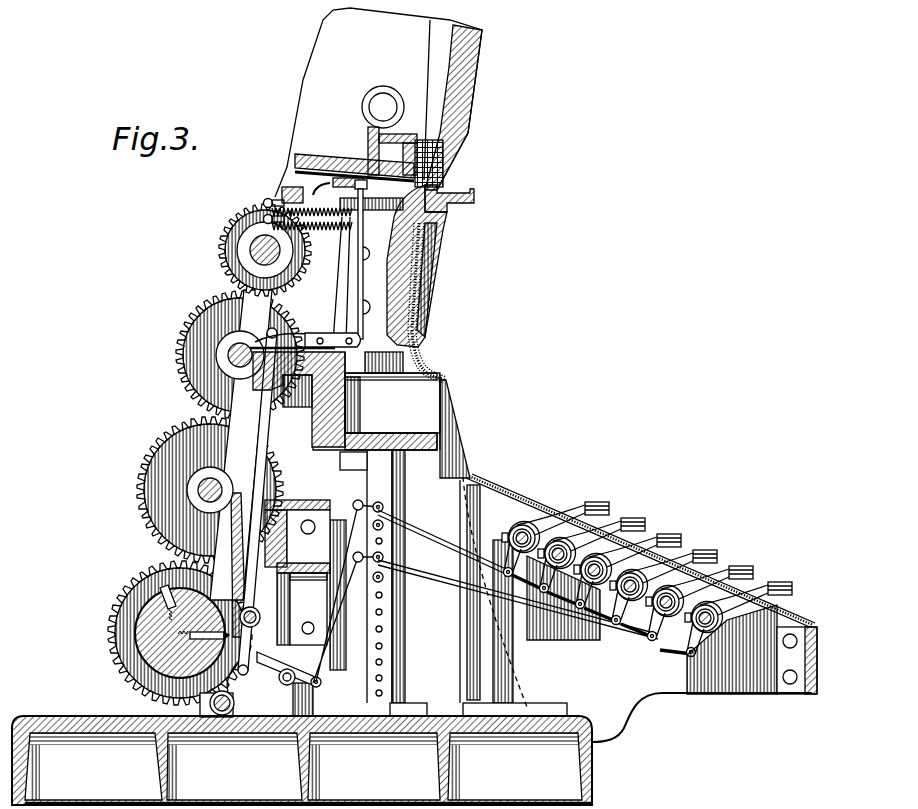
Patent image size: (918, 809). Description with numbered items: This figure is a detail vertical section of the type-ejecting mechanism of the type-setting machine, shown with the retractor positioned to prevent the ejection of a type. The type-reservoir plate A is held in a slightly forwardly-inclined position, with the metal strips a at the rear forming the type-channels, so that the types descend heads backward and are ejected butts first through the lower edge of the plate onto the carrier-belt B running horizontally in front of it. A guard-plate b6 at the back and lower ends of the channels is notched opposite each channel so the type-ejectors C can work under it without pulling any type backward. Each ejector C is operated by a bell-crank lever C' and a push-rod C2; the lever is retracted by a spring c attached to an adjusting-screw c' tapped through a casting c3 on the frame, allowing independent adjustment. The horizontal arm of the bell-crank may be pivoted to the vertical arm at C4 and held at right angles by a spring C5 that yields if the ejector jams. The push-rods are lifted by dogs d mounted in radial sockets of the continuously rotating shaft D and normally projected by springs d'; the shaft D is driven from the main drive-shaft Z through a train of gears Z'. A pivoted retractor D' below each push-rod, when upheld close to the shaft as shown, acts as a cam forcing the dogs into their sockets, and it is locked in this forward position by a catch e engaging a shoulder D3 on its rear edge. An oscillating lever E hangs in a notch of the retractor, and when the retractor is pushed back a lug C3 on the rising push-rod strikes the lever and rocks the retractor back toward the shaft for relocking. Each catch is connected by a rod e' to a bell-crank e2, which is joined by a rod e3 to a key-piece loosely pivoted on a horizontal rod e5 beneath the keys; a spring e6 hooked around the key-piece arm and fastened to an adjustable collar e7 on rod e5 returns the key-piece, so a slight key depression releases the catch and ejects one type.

The metal strips a is at (452, 34).
The plate A is at (397, 102).
The guard-plate b6 is at (370, 148).
The type-ejectors C is at (354, 153).
The casting c3 is at (284, 192).
The adjusting-screw c' is at (262, 198).
The spring c is at (337, 227).
The bell-crank levers C' is at (341, 261).
The carrier-belt B is at (462, 196).
The main drive-shaft Z is at (253, 250).
The train of gears Z' is at (210, 427).
The spring C5 is at (303, 337).
The pivot C4 is at (333, 326).
The push-rods C2 is at (262, 464).
The lug C3 is at (236, 463).
The rotating shaft D is at (171, 633).
The springs d' is at (126, 609).
The dogs d is at (154, 652).
The oscillating lever E is at (297, 572).
The shoulder D3 is at (277, 646).
The retractors D' is at (261, 686).
The catch e is at (262, 697).
The rod e' is at (348, 590).
The bell-crank e2 is at (398, 575).
The rod e3 is at (455, 592).
The horizontal rod e5 is at (518, 532).
The adjustable collar e7 is at (690, 562).
The spring e6 is at (739, 649).